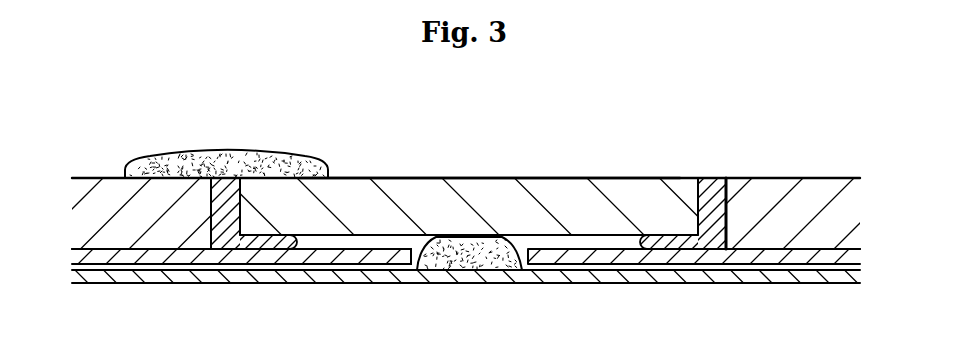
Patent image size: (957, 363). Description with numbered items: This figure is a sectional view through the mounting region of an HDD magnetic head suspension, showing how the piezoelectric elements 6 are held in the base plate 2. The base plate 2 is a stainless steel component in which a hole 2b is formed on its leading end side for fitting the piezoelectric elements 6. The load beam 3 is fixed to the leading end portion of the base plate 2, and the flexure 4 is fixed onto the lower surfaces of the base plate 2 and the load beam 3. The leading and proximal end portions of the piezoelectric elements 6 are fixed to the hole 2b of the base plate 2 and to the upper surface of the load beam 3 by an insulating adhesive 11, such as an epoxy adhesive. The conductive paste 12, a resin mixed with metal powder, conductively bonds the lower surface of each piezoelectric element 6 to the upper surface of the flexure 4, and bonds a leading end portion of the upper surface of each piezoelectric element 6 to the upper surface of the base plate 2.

The base plate 2 is at (768, 195).
The hole 2b is at (724, 210).
The load beam 3 is at (168, 256).
The flexure 4 is at (318, 276).
The piezoelectric elements 6 is at (490, 190).
The insulating adhesive 11 is at (240, 198).
The conductive paste 12 is at (193, 163).